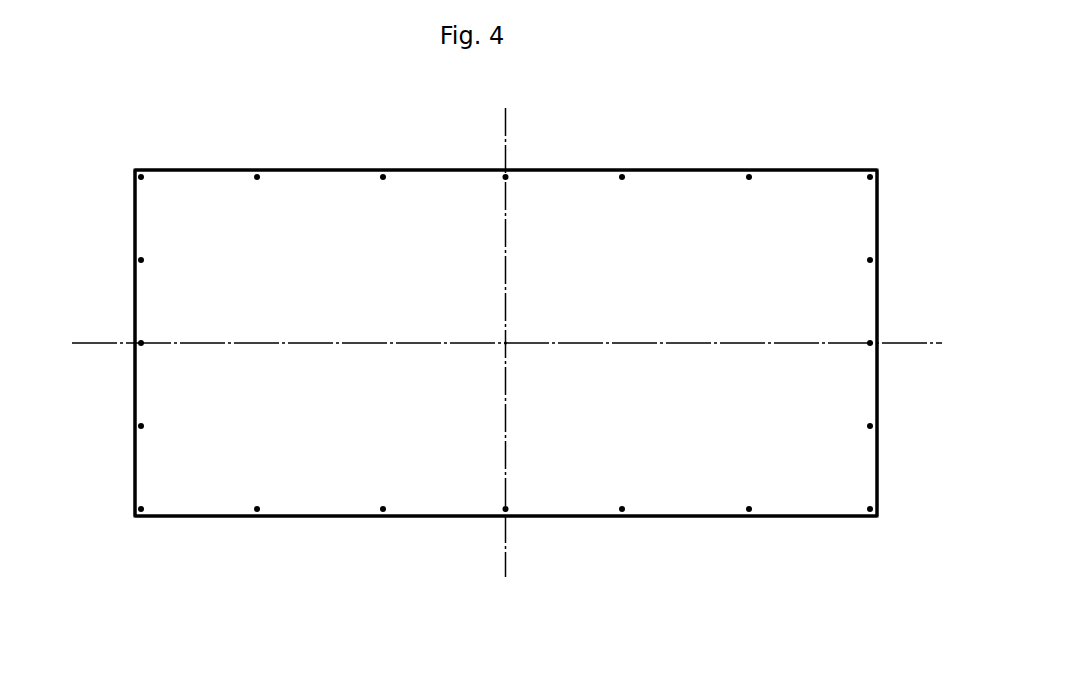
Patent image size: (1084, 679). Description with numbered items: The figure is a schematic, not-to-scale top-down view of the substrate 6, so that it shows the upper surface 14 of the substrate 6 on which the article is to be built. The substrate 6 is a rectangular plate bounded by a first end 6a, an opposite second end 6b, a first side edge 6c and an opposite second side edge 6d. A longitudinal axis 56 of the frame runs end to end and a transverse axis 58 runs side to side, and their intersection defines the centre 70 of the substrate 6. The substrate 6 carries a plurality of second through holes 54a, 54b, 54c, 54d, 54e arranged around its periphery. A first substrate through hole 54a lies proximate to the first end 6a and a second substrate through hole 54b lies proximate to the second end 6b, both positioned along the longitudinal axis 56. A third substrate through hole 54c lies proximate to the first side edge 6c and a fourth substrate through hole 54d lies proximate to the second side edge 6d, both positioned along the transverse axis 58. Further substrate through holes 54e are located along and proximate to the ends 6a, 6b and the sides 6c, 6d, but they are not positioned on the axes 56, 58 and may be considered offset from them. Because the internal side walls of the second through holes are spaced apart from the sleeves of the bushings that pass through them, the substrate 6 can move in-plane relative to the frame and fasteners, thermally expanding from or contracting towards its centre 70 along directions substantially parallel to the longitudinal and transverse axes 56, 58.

The substrate 6 is at (158, 148).
The first end of the substrate 6a is at (135, 407).
The second end of the substrate 6b is at (877, 298).
The first side edge of the substrate 6c is at (705, 169).
The second side edge of the substrate 6d is at (688, 516).
The upper surface 14 is at (655, 279).
The first substrate through hole 54a is at (141, 343).
The second substrate through hole 54b is at (870, 343).
The third substrate through hole 54c is at (505, 176).
The fourth substrate through hole 54d is at (505, 509).
The further substrate through holes 54e is at (257, 176).
The longitudinal axis 56 is at (113, 347).
The transverse axis 58 is at (506, 120).
The centre 70 is at (505, 342).